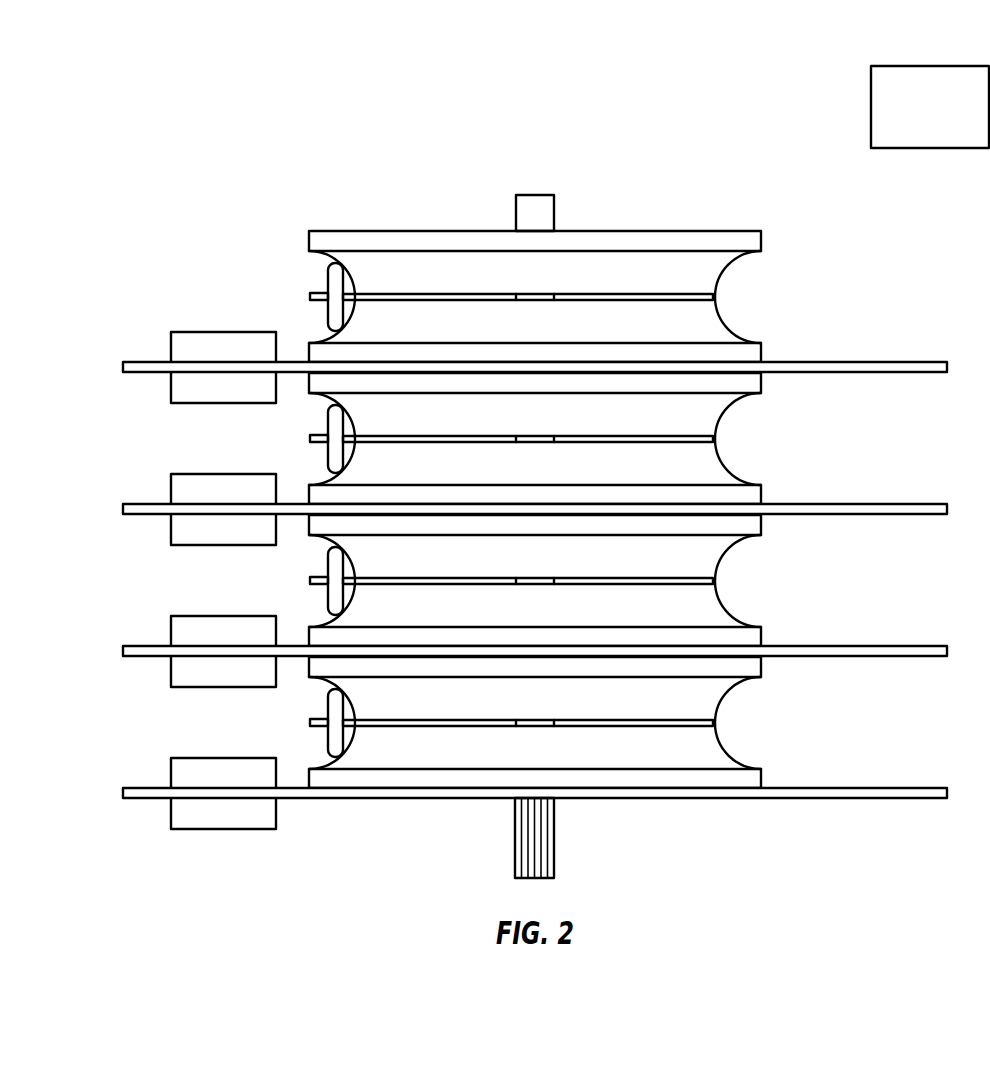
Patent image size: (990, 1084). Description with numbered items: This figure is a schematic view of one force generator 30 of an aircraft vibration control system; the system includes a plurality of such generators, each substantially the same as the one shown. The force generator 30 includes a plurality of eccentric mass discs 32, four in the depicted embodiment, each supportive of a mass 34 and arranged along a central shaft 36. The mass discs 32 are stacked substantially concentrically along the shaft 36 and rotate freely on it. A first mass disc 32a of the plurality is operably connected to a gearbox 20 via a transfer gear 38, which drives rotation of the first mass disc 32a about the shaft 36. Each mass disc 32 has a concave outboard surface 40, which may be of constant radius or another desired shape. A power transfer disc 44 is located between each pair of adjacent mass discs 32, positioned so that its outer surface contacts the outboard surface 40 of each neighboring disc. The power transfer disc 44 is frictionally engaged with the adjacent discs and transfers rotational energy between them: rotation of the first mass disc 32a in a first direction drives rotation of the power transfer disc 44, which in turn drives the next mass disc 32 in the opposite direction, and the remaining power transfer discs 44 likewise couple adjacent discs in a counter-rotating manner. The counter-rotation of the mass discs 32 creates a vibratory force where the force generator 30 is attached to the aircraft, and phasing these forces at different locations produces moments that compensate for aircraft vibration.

The gearbox 20 is at (703, 230).
The force generator 30 is at (170, 180).
The eccentric mass disc 32 is at (882, 362).
The first mass disc 32a is at (712, 322).
The mass 34 is at (171, 347).
The central shaft 36 is at (515, 837).
The transfer gear 38 is at (375, 231).
The concave outboard surface 40 is at (722, 413).
The power transfer disc 44 is at (327, 315).